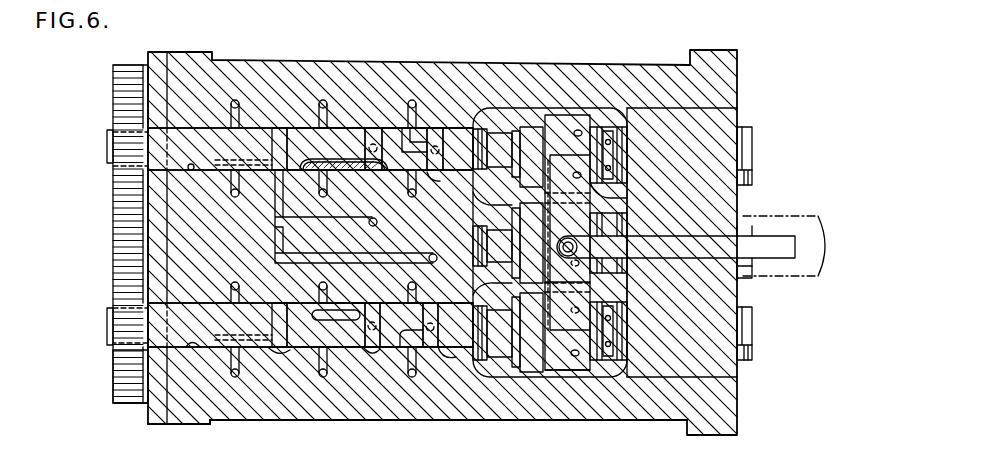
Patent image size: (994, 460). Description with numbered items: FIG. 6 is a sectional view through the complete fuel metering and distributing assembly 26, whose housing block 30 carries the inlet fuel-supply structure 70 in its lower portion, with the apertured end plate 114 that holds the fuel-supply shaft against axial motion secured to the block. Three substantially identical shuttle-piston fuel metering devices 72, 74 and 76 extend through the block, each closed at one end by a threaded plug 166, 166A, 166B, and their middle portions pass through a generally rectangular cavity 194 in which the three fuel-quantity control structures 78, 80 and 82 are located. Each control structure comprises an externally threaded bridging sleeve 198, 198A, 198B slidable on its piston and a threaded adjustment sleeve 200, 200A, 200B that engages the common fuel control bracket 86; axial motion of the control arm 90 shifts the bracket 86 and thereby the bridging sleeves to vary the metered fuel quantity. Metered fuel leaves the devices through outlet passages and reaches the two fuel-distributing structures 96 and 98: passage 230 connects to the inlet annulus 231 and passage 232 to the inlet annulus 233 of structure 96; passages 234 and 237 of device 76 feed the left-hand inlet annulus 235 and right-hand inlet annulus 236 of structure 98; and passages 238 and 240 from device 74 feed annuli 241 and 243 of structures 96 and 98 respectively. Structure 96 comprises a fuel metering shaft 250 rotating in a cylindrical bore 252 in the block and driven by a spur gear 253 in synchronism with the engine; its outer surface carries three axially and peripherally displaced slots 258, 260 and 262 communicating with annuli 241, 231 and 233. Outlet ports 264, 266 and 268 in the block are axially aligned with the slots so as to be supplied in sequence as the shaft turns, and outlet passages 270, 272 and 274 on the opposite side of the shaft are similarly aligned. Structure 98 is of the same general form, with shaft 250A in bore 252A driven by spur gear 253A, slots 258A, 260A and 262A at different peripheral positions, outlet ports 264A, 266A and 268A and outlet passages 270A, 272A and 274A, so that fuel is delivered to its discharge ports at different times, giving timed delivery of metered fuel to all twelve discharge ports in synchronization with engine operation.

The complete assembly 26 is at (492, 64).
The housing block 30 is at (492, 419).
The inlet fuel-supply structure 70 is at (800, 218).
The shuttle-piston fuel metering device 72 is at (489, 161).
The fuel metering device 74 is at (482, 251).
The fuel metering device 76 is at (489, 340).
The fuel-quantity control structure 78 is at (566, 116).
The fuel-quantity control structure 80 is at (592, 282).
The fuel-quantity control structure 82 is at (578, 372).
The fuel control bracket 86 is at (597, 190).
The control arm 90 is at (803, 246).
The fuel-distributing structure 96 is at (107, 146).
The fuel-distributing structure 98 is at (107, 326).
The apertured end plate 114 is at (150, 414).
The threaded plug 166 is at (752, 135).
The threaded plug 166A is at (752, 278).
The threaded plug 166B is at (752, 357).
The cavity 194 is at (629, 310).
The bridging sleeve 198 is at (627, 152).
The bridging sleeve 198A is at (627, 222).
The bridging sleeve 198B is at (614, 334).
The adjustment sleeve 200 is at (526, 125).
The adjustment sleeve 200A is at (527, 208).
The adjustment sleeve 200B is at (532, 373).
The outlet passage 230 is at (372, 143).
The inlet annulus 231 is at (372, 175).
The outlet passage 232 is at (436, 145).
The inlet annulus 233 is at (432, 178).
The outlet passage 234 is at (370, 308).
The left-hand inlet annulus 235 is at (368, 353).
The right-hand inlet annulus 236 is at (442, 354).
The outlet passage 237 is at (432, 308).
The outlet passage 238 is at (377, 223).
The outlet passage 240 is at (436, 255).
The inlet annulus 241 is at (280, 127).
The inlet annulus 243 is at (282, 353).
The fuel metering shaft 250 is at (189, 130).
The fuel distributing shaft 250A is at (188, 303).
The cylindrical bore 252 is at (191, 171).
The cylindrical bore 252A is at (197, 349).
The spur gear 253 is at (118, 88).
The spur gear 253A is at (118, 382).
The slot 258 is at (227, 151).
The slot 258A is at (240, 324).
The slot 260 is at (326, 149).
The slot 260A is at (326, 325).
The slot 262 is at (400, 140).
The slot 262A is at (401, 325).
The outlet port 264 is at (240, 118).
The outlet port 264A is at (242, 283).
The outlet port 266 is at (323, 99).
The outlet port 266A is at (328, 288).
The outlet port 268 is at (413, 99).
The outlet port 268A is at (416, 288).
The outlet passage 270 is at (238, 197).
The outlet passage 270A is at (236, 378).
The outlet passage 272 is at (328, 196).
The outlet passage 272A is at (321, 378).
The outlet passage 274 is at (416, 196).
The outlet passage 274A is at (411, 378).